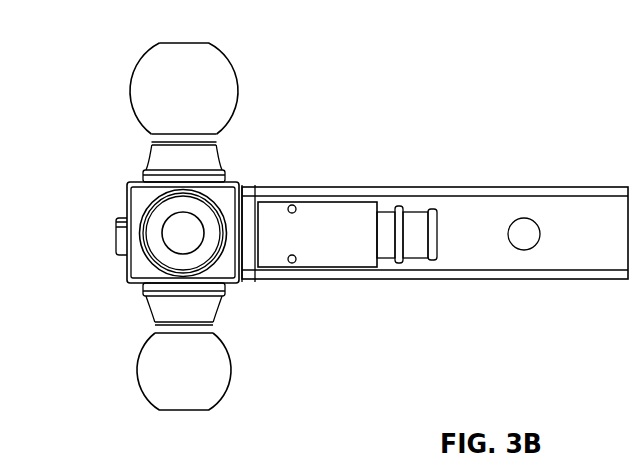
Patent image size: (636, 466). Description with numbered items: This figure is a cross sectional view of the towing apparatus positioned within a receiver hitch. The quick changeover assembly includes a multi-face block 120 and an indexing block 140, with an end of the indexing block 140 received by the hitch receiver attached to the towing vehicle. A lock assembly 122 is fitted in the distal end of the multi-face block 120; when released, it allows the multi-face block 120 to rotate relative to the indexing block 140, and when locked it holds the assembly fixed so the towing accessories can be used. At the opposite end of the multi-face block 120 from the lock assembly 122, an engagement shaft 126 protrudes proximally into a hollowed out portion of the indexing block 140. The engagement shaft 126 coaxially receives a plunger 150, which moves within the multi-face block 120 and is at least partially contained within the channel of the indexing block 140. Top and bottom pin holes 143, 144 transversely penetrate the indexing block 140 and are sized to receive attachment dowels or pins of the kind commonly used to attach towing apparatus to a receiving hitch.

The engagement shaft 126 is at (398, 62).
The multi-face block 120 is at (228, 277).
The lock assembly 122 is at (113, 225).
The indexing block 140 is at (313, 223).
The top pin hole 143 is at (287, 205).
The bottom pin hole 144 is at (292, 263).
The plunger 150 is at (410, 223).